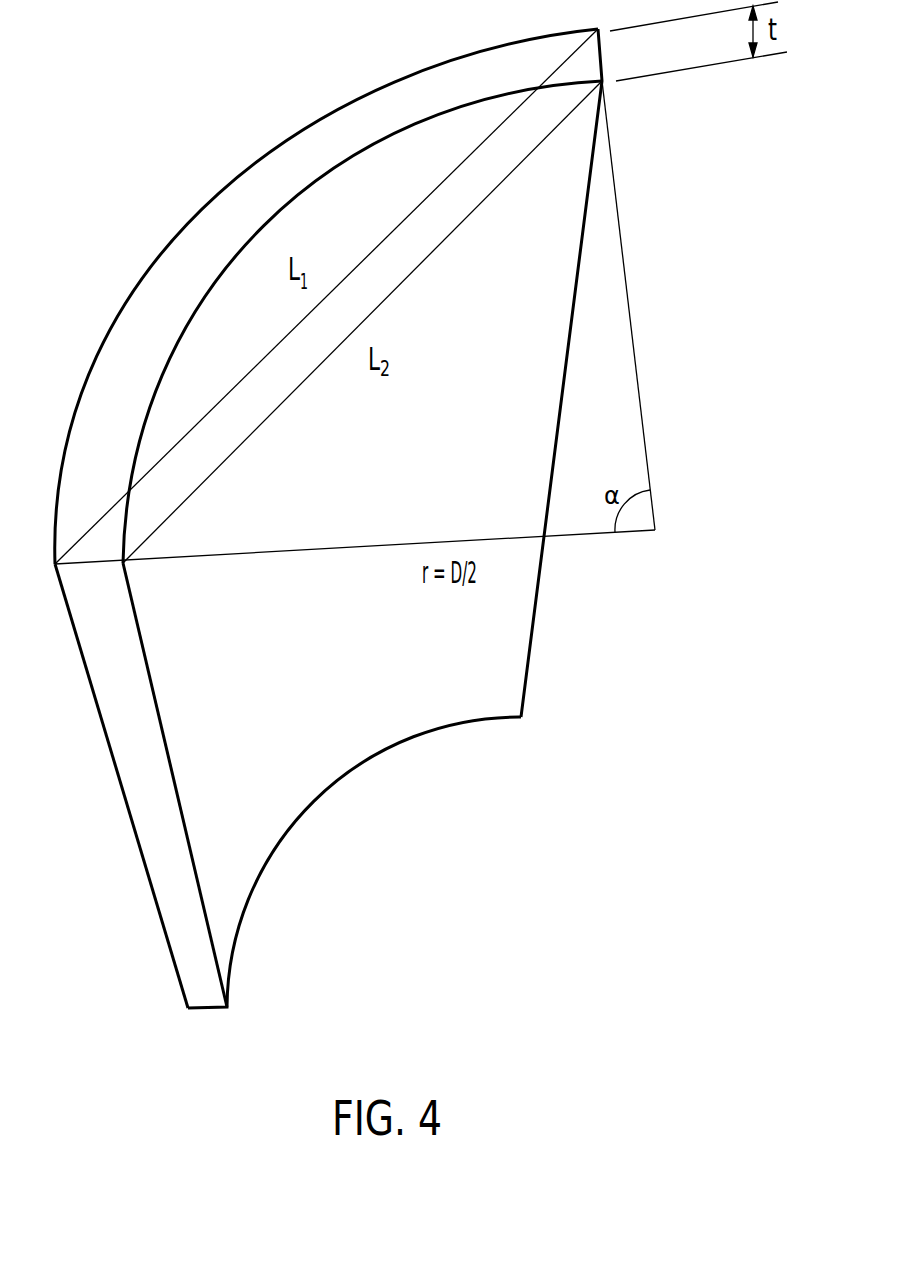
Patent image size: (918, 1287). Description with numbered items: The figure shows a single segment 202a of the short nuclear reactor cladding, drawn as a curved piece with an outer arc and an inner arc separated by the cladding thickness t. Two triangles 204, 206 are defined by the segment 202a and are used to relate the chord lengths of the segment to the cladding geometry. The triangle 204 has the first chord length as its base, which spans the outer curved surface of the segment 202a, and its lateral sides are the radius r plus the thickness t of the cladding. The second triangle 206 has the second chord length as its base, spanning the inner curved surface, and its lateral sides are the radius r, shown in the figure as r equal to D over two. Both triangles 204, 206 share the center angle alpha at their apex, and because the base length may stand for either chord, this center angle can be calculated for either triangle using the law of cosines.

The segment 202a is at (223, 203).
The triangle 204 is at (198, 423).
The second triangle 206 is at (455, 228).